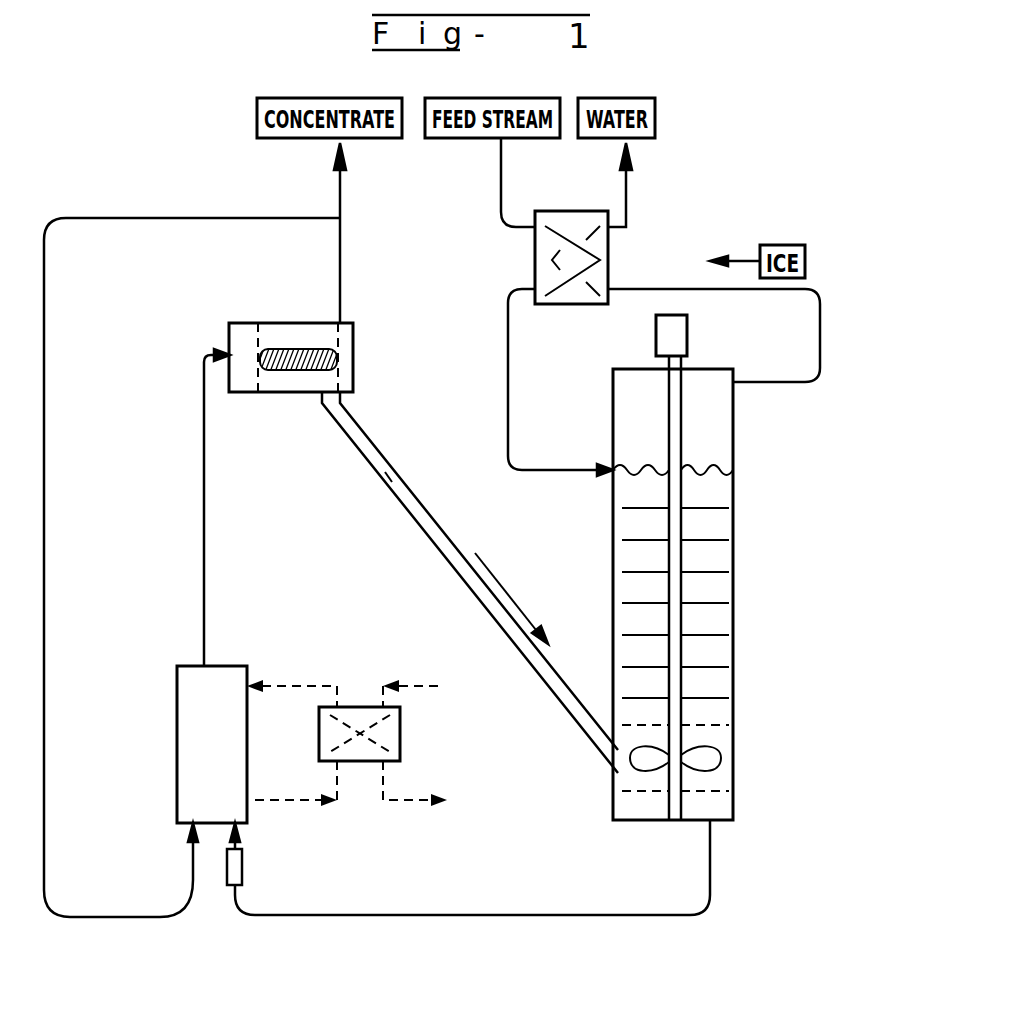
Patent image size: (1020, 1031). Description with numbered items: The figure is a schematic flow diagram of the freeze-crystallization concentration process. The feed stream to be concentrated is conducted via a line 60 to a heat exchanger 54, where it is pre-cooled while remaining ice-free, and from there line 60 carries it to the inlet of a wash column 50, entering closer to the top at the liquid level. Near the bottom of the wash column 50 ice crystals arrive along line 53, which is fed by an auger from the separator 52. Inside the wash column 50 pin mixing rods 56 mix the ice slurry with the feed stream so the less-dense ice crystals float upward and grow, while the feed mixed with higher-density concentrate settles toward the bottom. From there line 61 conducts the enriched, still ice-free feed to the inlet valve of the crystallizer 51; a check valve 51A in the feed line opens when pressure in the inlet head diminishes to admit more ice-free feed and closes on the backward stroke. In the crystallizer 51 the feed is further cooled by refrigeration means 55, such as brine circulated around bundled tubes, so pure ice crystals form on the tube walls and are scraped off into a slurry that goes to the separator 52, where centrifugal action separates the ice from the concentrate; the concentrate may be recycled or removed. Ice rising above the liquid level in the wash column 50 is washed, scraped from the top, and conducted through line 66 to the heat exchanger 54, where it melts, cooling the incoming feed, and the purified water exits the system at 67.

The wash column 50 is at (735, 585).
The crystallizer 51 is at (177, 752).
The check valve 51A is at (245, 862).
The separator 52 is at (250, 323).
The line 53 is at (462, 578).
The heat exchanger 54 is at (535, 272).
The refrigeration means 55 is at (400, 745).
The pin mixing rods 56 is at (705, 698).
The line 60 is at (508, 392).
The line 61 is at (412, 917).
The line 66 is at (820, 325).
The purified water outlet 67 is at (626, 182).